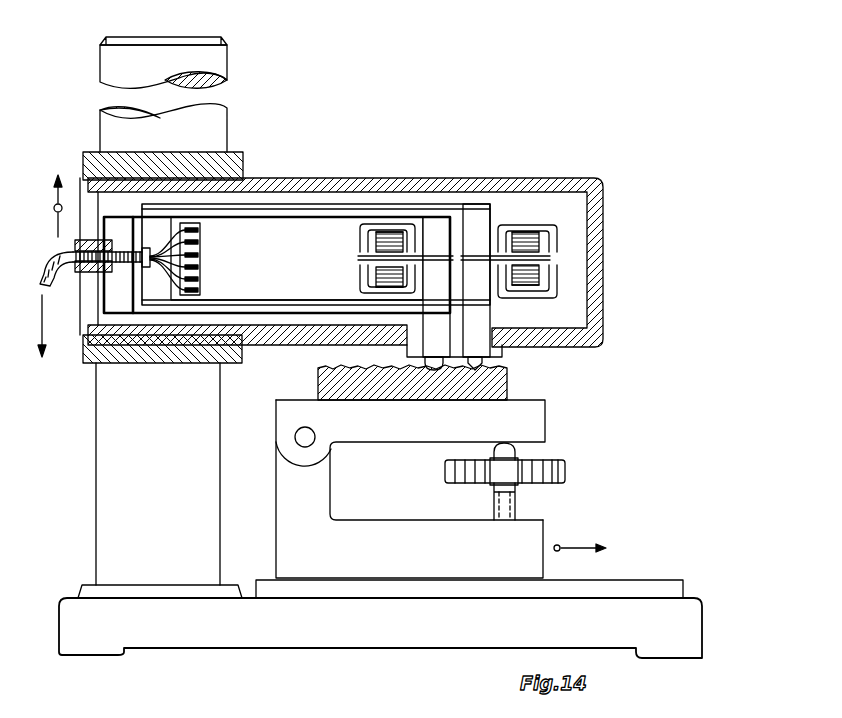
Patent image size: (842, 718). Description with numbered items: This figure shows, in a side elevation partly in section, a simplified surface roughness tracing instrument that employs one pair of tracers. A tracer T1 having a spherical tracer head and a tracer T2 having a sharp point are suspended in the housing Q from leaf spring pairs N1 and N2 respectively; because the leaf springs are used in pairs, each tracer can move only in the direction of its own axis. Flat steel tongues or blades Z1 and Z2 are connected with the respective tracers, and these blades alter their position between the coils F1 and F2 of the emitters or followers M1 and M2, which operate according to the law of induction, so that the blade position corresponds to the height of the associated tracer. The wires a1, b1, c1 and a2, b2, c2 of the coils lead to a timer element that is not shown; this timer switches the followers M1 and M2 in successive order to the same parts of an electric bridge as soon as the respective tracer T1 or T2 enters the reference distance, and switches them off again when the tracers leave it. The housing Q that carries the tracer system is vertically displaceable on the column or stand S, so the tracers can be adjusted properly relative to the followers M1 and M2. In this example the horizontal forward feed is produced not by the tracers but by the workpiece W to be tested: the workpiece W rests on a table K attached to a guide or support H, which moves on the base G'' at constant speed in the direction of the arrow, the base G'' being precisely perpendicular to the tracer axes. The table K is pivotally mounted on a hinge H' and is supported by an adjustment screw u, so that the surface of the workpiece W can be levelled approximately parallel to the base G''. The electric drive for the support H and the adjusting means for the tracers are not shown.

The housing Q is at (312, 178).
The leaf spring pair N1 is at (243, 217).
The leaf spring pair N2 is at (302, 208).
The emitter (follower) M1 is at (405, 224).
The emitter (follower) M2 is at (517, 226).
The coil F1 is at (381, 232).
The coil F2 is at (385, 289).
The wire a1 is at (376, 235).
The wire b1 is at (376, 284).
The wire c1 is at (376, 269).
The wire a2 is at (567, 240).
The wire b2 is at (567, 288).
The wire c2 is at (567, 270).
The flat steel tongue (blade) Z1 is at (358, 258).
The flat steel tongue (blade) Z2 is at (550, 258).
The tracer T1 is at (425, 366).
The tracer T2 is at (480, 362).
The workpiece W is at (507, 386).
The table K is at (408, 432).
The guide (support) H is at (409, 489).
The hinge H' is at (285, 445).
The adjustment screw u is at (566, 472).
The column (stand) S is at (110, 500).
The base G'' is at (469, 568).